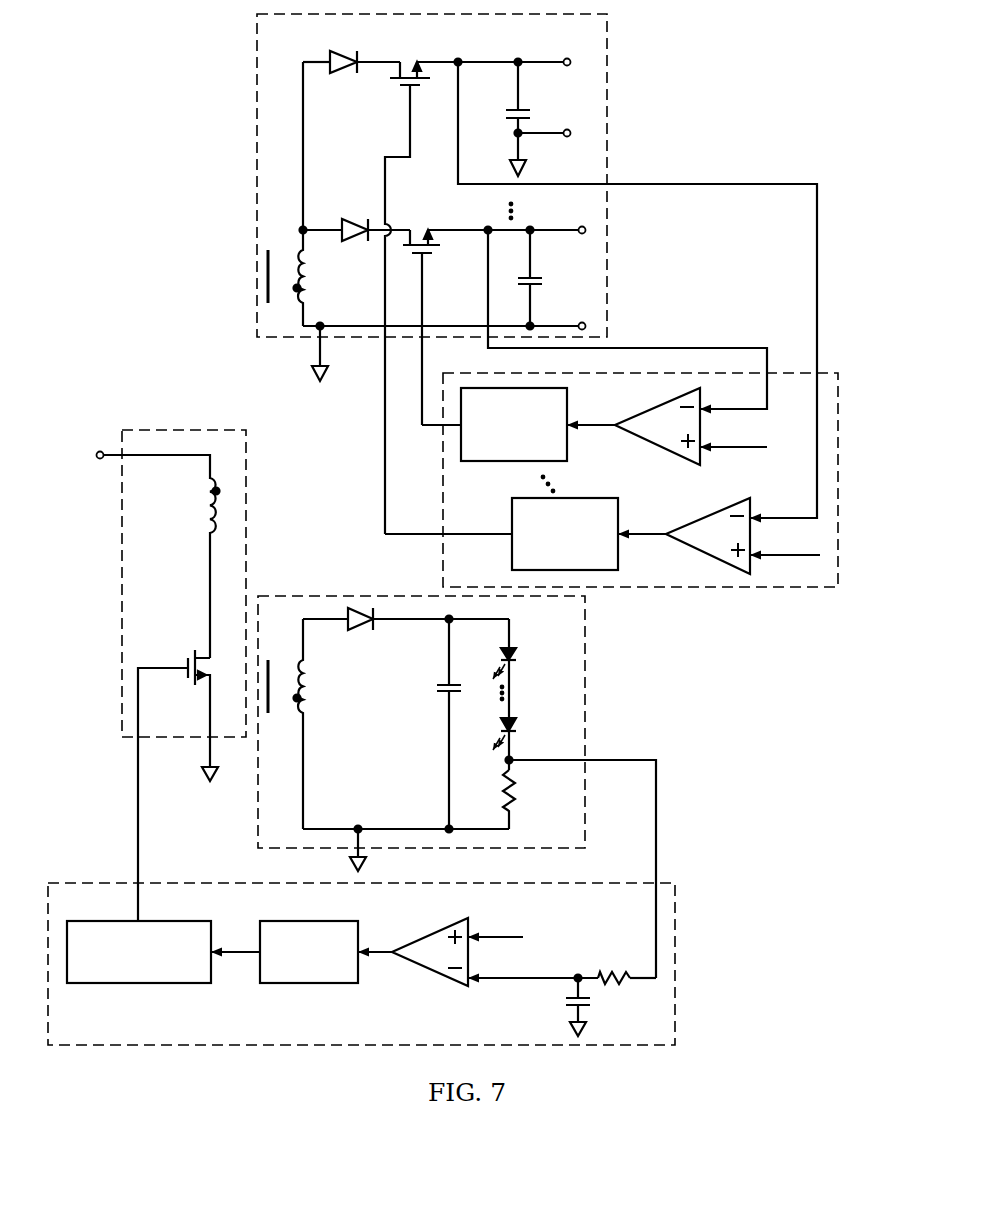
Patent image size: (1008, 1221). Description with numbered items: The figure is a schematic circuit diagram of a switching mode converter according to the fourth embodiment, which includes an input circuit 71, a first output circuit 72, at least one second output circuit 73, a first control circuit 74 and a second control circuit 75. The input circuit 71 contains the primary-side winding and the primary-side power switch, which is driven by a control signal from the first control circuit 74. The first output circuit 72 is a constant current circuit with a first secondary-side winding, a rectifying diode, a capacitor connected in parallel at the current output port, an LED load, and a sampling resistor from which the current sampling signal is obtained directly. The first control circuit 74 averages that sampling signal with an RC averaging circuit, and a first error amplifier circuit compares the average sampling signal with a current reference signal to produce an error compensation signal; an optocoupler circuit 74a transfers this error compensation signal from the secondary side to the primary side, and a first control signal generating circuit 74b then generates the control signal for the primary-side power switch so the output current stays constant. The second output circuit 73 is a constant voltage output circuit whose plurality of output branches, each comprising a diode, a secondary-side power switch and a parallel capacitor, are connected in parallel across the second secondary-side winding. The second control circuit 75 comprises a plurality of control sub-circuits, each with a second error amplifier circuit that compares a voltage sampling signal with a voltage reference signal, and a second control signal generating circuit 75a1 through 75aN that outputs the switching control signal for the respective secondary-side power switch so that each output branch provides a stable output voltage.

The input circuit 71 is at (160, 430).
The first output circuit 72 is at (585, 663).
The second output circuit 73 is at (607, 226).
The first control circuit 74 is at (675, 1009).
The optocoupler circuit 74a is at (309, 952).
The first control signal generating circuit 74b is at (139, 952).
The second control circuit 75 is at (838, 553).
The second control signal generating circuit 75a1 is at (514, 424).
The second control signal generating circuit 75aN is at (565, 534).